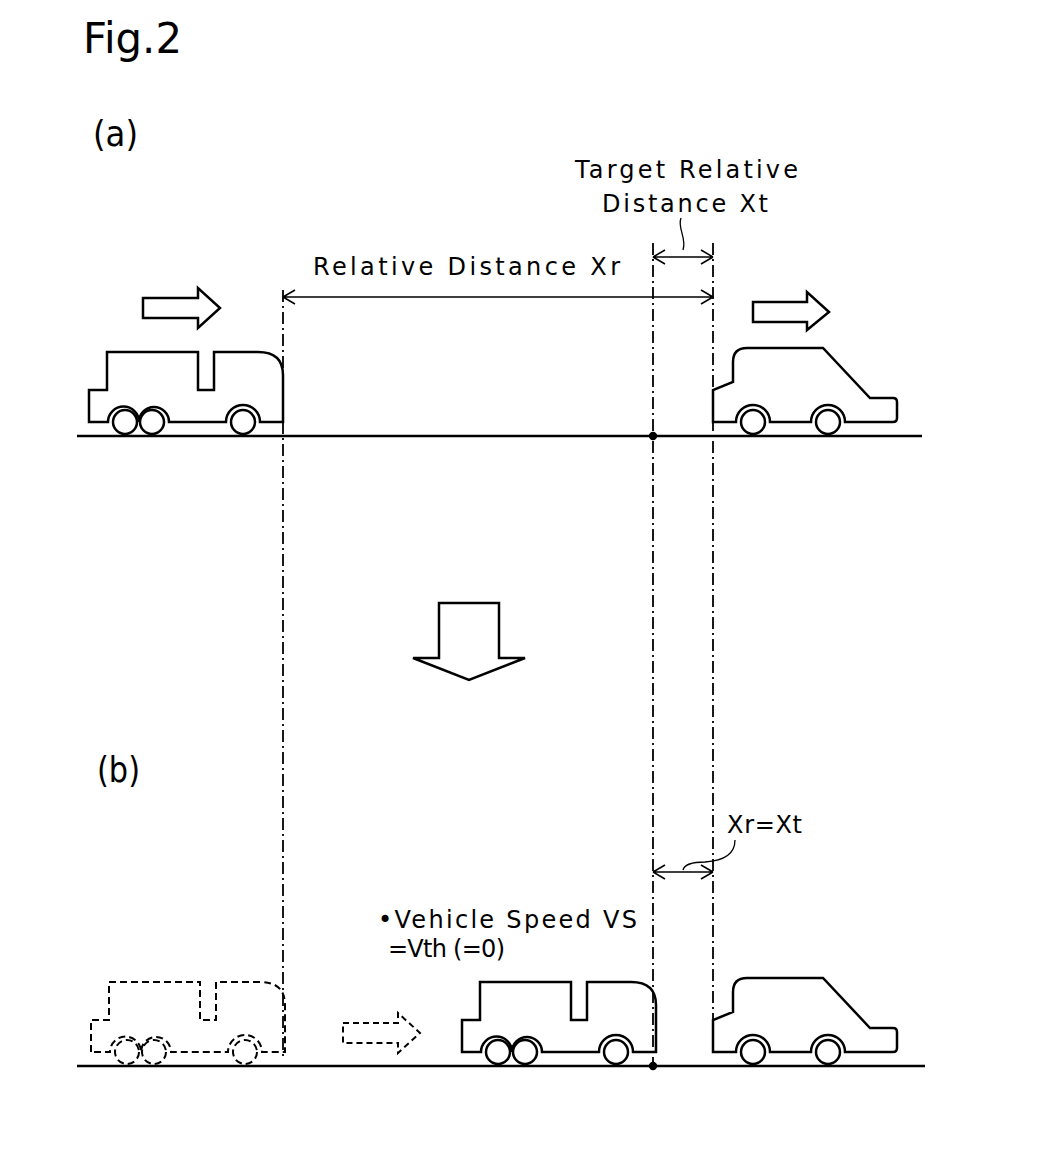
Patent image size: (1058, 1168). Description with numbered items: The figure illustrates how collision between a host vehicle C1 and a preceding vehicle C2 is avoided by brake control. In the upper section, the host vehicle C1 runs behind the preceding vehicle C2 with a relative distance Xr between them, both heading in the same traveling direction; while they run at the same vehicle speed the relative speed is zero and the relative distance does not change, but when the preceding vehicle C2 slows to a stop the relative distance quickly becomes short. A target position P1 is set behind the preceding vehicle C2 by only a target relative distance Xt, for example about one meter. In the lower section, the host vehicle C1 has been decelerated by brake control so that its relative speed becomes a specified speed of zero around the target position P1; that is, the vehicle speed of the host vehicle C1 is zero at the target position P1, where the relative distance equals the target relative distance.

The host vehicle C1 is at (285, 402).
The preceding vehicle C2 is at (850, 372).
The target position P1 is at (651, 438).